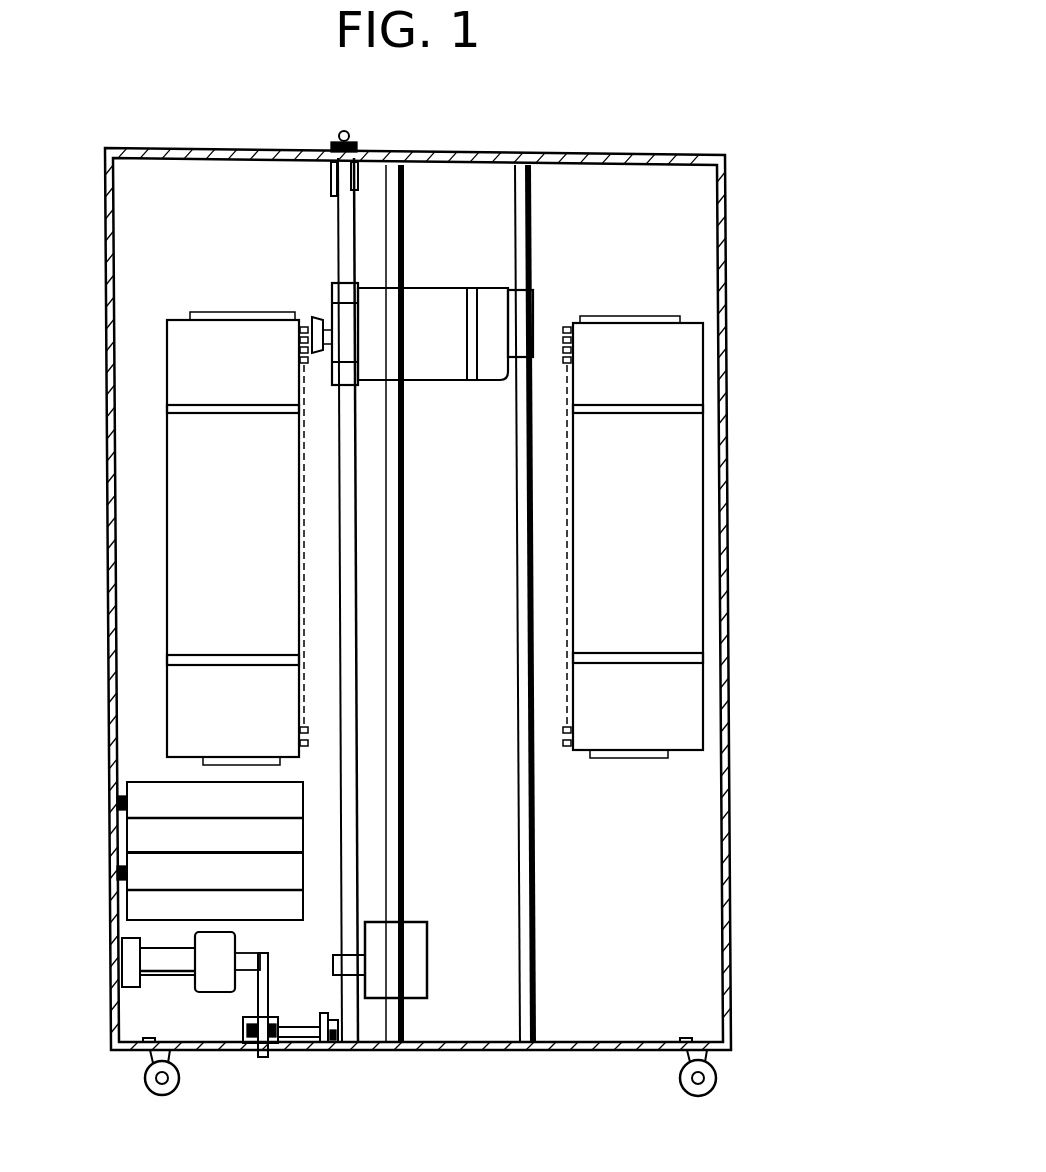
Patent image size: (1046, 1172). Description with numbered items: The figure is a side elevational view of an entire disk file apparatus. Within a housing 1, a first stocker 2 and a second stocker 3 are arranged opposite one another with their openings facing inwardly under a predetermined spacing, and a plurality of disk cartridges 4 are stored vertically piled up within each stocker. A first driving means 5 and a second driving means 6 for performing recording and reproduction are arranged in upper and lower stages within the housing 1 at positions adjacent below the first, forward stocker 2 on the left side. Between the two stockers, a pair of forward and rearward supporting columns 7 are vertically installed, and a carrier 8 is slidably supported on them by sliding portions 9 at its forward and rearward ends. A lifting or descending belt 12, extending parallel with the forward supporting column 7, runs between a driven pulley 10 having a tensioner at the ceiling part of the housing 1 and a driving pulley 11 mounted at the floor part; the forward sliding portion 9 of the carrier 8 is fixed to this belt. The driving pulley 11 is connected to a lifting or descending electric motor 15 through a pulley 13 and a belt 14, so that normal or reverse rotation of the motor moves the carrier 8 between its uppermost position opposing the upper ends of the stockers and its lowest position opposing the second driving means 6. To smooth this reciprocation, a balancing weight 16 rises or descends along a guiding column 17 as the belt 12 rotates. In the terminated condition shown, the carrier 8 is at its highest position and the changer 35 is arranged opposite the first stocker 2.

The housing 1 is at (727, 283).
The first stocker 2 is at (167, 388).
The second stocker 3 is at (703, 390).
The disk cartridges 4 is at (303, 324).
The first driving means 5 is at (120, 800).
The second driving means 6 is at (120, 870).
The supporting columns 7 is at (535, 928).
The carrier 8 is at (439, 290).
The sliding portions 9 is at (333, 296).
The driven pulley 10 is at (333, 172).
The driving pulley 11 is at (329, 1040).
The lifting or descending belt 12 is at (354, 1032).
The pulley 13 is at (245, 1045).
The belt 14 is at (263, 1055).
The lifting or descending electric motor 15 is at (122, 962).
The balancing weight 16 is at (420, 960).
The guiding column 17 is at (400, 1022).
The changer 35 is at (317, 312).